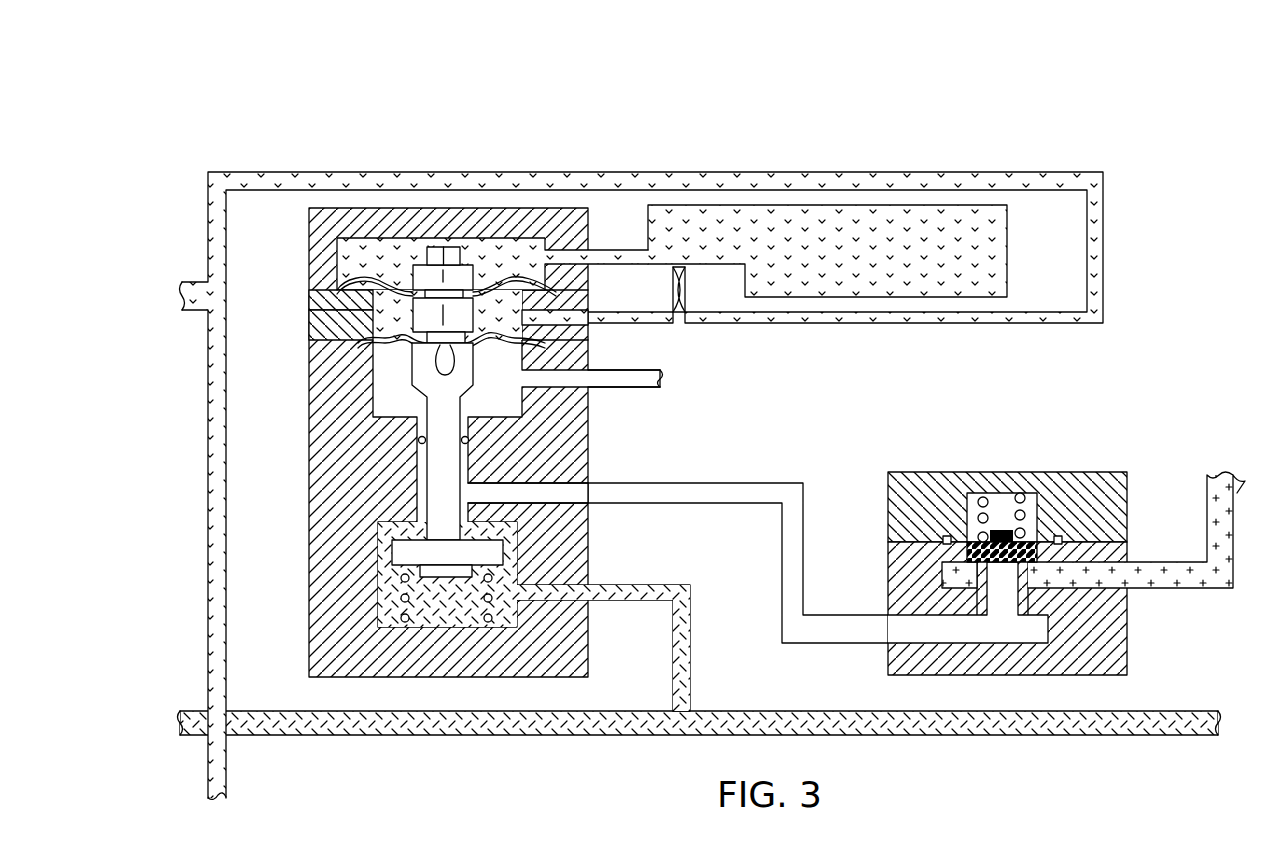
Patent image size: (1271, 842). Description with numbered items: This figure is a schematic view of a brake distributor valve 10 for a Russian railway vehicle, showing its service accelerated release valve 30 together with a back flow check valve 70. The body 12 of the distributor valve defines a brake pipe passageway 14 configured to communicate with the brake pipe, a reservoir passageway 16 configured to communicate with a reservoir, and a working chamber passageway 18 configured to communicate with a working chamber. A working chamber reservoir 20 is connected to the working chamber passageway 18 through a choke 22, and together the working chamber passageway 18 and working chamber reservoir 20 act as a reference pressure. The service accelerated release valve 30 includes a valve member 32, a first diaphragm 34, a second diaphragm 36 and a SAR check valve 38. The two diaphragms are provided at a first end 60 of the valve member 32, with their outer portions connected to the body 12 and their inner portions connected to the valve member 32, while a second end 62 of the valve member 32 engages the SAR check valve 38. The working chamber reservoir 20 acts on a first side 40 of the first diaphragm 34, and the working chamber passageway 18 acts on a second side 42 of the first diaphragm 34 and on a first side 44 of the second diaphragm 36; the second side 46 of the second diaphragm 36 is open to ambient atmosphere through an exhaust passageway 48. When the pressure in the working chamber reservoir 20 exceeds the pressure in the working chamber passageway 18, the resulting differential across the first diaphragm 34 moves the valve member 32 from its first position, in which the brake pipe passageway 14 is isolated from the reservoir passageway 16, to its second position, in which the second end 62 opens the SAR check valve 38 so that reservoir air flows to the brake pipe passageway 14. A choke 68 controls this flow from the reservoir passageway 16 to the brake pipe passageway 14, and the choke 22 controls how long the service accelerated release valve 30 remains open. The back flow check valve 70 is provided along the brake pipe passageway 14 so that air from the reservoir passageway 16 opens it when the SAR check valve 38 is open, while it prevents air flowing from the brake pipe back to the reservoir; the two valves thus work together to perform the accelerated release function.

The brake distributor valve 10 is at (142, 188).
The body 12 is at (845, 703).
The brake pipe passageway 14 is at (728, 495).
The reservoir passageway 16 is at (478, 738).
The working chamber passageway 18 is at (1102, 257).
The working chamber reservoir 20 is at (850, 216).
The choke 22 is at (673, 290).
The service accelerated release valve 30 is at (497, 402).
The valve member 32 is at (442, 458).
The first diaphragm 34 is at (378, 277).
The second diaphragm 36 is at (405, 348).
The SAR check valve 38 is at (392, 560).
The first side of the first diaphragm 40 is at (517, 265).
The second side of the first diaphragm 42 is at (365, 320).
The first side of the second diaphragm 44 is at (355, 345).
The second side of the second diaphragm 46 is at (398, 368).
The exhaust passageway 48 is at (638, 390).
The first end of the valve member 60 is at (432, 247).
The second end of the valve member 62 is at (438, 532).
The choke 68 is at (536, 496).
The back flow check valve 70 is at (965, 542).